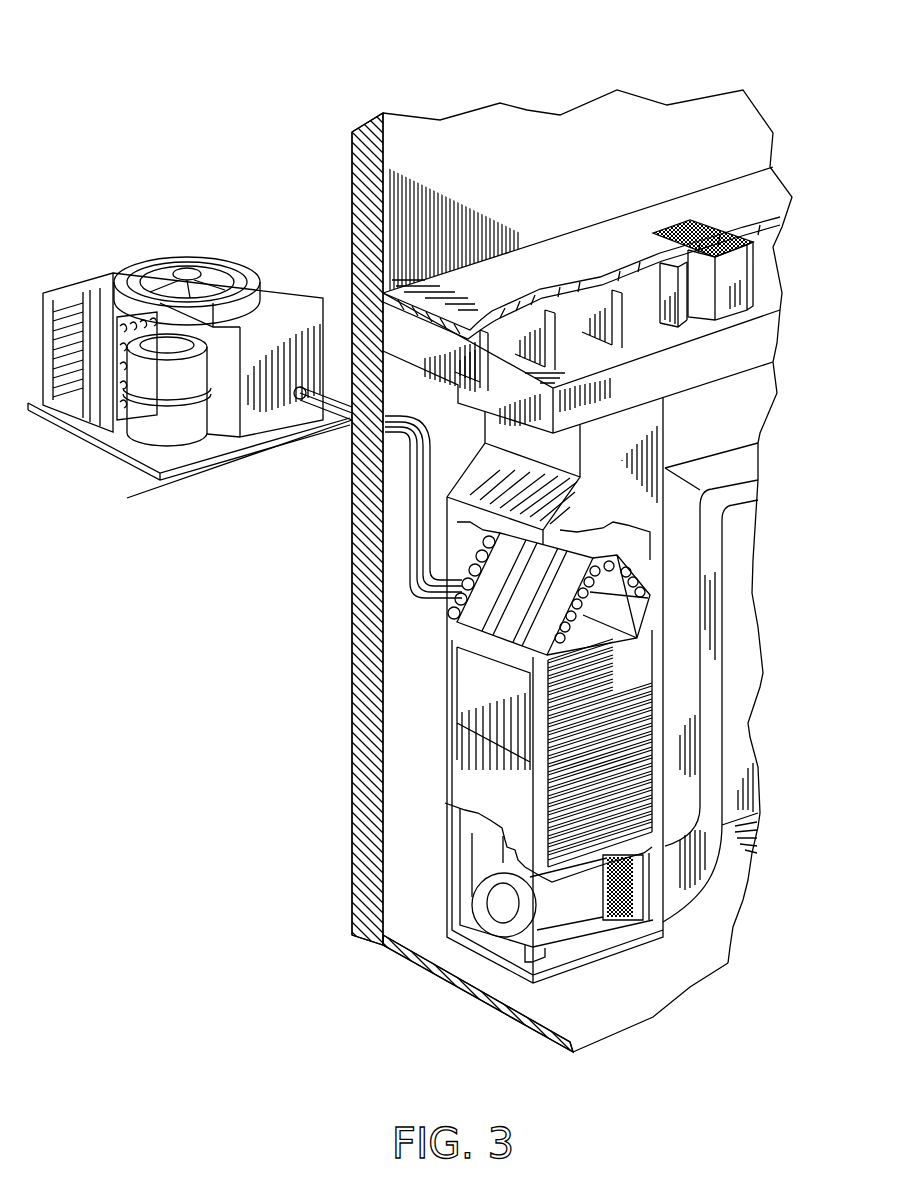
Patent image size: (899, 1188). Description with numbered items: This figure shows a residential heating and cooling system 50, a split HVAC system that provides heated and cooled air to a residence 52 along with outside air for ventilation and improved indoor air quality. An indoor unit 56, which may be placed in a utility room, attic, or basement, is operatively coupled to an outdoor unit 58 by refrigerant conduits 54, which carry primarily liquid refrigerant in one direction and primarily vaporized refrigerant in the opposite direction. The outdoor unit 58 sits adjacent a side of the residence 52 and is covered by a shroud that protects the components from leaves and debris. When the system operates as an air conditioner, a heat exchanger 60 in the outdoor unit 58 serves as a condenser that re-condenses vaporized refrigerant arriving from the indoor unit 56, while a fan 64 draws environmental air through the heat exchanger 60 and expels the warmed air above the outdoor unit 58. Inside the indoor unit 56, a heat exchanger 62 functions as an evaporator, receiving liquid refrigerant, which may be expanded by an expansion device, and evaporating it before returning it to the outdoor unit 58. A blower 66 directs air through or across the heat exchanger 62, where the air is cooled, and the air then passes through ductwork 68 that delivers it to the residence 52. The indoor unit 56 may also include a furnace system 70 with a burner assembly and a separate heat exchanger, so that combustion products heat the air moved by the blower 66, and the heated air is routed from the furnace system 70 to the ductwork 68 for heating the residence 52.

The residential heating and cooling system 50 is at (181, 80).
The residence 52 is at (488, 135).
The refrigerant conduits 54 is at (417, 503).
The indoor unit 56 is at (427, 743).
The outdoor unit 58 is at (143, 244).
The heat exchanger 60 is at (120, 317).
The heat exchanger 62 is at (505, 618).
The fan 64 is at (200, 258).
The blower 66 is at (497, 927).
The ductwork 68 is at (708, 358).
The furnace system 70 is at (462, 690).